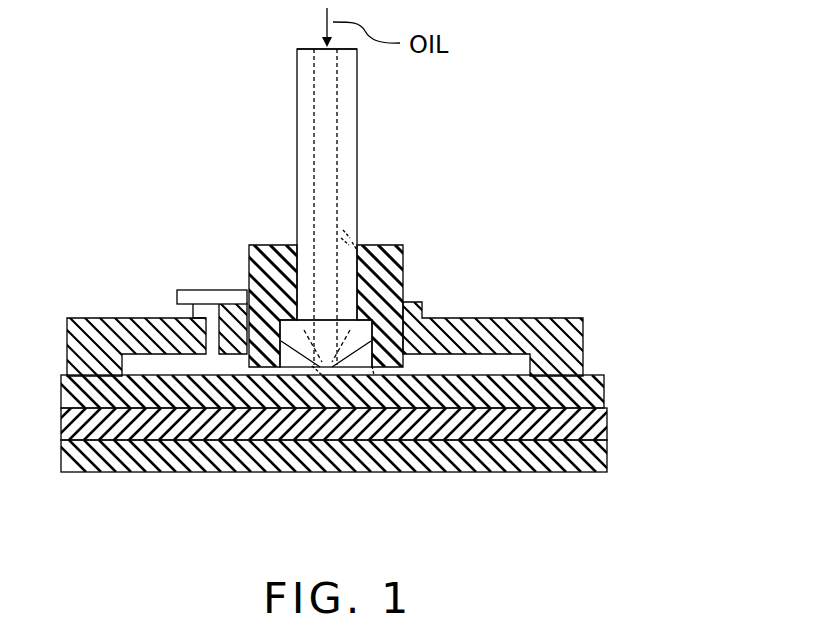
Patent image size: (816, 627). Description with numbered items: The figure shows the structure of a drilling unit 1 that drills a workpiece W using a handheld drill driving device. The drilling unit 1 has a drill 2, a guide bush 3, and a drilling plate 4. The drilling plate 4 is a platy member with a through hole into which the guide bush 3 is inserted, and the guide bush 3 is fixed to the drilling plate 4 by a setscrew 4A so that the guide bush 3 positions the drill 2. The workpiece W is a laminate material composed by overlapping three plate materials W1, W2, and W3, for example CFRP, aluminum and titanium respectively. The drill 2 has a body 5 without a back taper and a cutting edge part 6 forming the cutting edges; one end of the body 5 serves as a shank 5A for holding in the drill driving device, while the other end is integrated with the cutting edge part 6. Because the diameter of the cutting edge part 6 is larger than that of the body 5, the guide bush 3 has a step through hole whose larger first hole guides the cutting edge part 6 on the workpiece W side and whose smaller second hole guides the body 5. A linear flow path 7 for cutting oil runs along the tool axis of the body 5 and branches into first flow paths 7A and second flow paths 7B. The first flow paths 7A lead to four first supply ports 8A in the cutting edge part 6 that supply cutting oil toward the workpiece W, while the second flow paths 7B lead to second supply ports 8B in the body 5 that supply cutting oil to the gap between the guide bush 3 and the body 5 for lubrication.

The drilling unit 1 is at (100, 54).
The drill 2 is at (259, 208).
The guide bush 3 is at (403, 272).
The drilling plate 4 is at (583, 337).
The setscrew 4A is at (176, 296).
The body 5 is at (297, 180).
The shank 5A is at (297, 57).
The cutting edge part 6 is at (297, 332).
The flow path 7 is at (330, 132).
The first flow paths 7A is at (315, 380).
The second flow paths 7B is at (358, 236).
The first supply ports 8A is at (370, 375).
The second supply ports 8B is at (352, 241).
The workpiece W is at (377, 415).
The plate material W1 is at (604, 393).
The plate material W2 is at (607, 425).
The plate material W3 is at (607, 458).